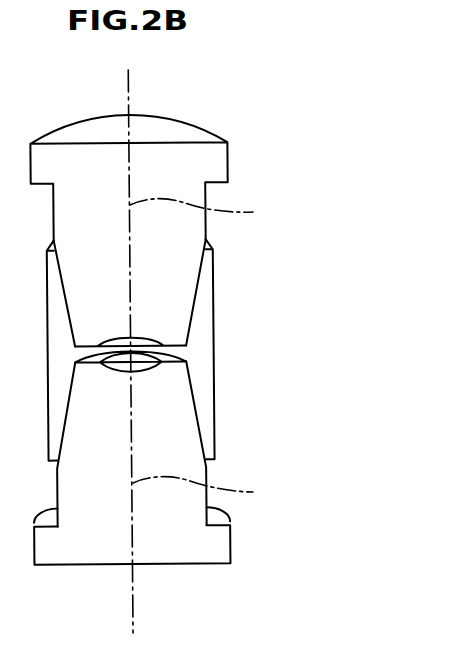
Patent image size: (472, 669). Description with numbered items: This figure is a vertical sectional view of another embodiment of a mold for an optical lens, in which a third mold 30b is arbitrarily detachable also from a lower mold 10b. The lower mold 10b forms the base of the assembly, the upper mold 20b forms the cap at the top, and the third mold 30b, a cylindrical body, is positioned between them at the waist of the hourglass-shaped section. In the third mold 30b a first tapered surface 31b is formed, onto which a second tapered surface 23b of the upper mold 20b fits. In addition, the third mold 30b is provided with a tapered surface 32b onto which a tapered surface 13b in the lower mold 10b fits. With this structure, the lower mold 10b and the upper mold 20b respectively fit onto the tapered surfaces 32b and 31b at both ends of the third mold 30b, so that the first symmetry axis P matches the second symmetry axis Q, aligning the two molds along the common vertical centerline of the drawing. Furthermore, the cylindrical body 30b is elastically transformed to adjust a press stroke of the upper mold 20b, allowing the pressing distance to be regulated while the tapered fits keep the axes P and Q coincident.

The lower mold 10b is at (155, 557).
The tapered surface 13b is at (180, 435).
The upper mold 20b is at (205, 128).
The second tapered surface 23b is at (200, 271).
The third mold 30b is at (205, 292).
The first tapered surface 31b is at (192, 310).
The tapered surface 32b is at (191, 389).
The second symmetry axis Q is at (204, 207).
The first symmetry axis P is at (204, 491).